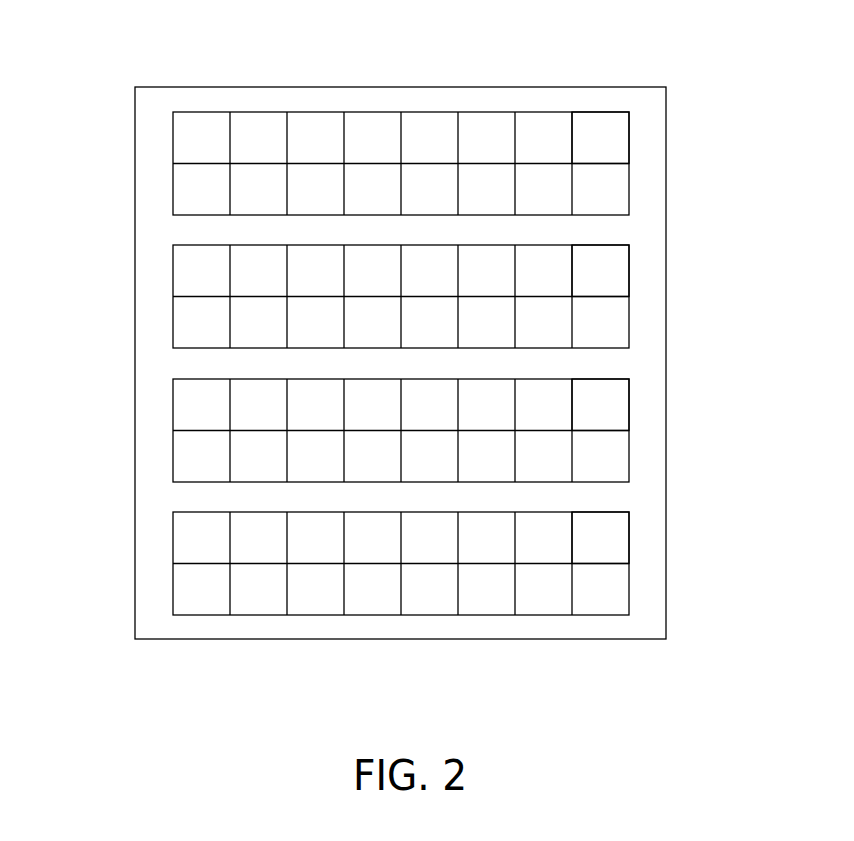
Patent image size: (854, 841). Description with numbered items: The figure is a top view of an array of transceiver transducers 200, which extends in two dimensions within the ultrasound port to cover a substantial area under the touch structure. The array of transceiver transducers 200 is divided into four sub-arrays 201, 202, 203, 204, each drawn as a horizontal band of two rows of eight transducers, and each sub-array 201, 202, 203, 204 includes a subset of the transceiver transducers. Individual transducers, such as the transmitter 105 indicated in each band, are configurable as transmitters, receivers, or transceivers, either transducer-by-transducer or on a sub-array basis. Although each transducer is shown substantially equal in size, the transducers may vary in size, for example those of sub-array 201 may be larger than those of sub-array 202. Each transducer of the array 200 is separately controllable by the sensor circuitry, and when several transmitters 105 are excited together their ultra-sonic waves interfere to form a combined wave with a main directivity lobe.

The array of transceiver transducers 200 is at (400, 87).
The sub-array 201 is at (173, 145).
The sub-array 202 is at (173, 270).
The sub-array 203 is at (173, 410).
The sub-array 204 is at (173, 545).
The transmitter 105 is at (610, 139).